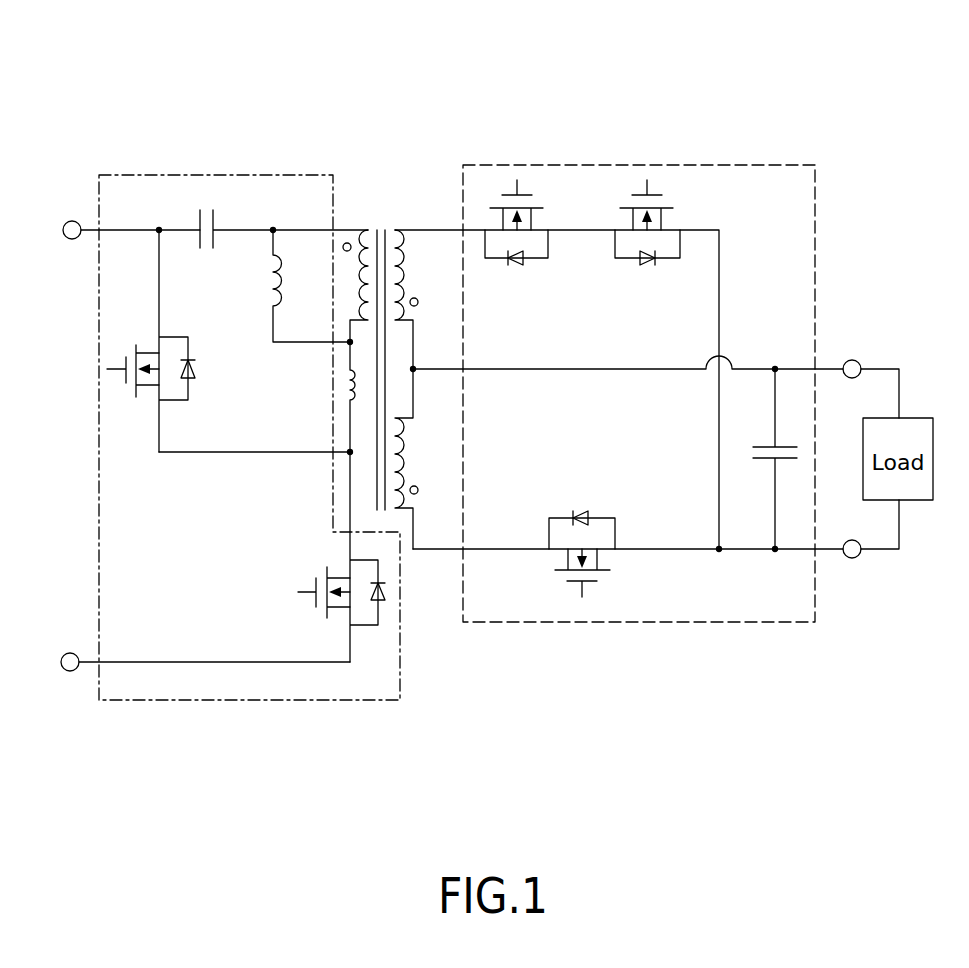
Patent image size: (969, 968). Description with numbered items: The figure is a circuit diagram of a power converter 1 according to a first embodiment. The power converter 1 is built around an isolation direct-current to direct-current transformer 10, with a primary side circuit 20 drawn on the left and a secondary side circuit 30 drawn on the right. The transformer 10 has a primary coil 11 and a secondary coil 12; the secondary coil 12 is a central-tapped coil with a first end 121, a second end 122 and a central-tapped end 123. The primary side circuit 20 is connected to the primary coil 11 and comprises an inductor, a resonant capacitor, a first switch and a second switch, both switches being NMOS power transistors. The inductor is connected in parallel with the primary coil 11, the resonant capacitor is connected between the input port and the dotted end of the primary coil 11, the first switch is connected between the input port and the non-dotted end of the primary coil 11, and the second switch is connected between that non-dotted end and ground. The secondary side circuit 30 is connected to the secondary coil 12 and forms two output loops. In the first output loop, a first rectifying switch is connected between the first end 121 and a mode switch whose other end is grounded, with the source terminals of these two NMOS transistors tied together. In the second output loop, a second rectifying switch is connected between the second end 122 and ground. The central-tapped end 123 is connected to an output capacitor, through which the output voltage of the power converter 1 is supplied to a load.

The power converter 1 is at (597, 68).
The isolation direct-current to direct-current transformer 10 is at (374, 193).
The primary coil 11 is at (367, 270).
The secondary coil 12 is at (398, 230).
The first end 121 is at (435, 230).
The second end 122 is at (439, 549).
The central-tapped end 123 is at (438, 369).
The primary side circuit 20 is at (215, 175).
The secondary side circuit 30 is at (710, 165).